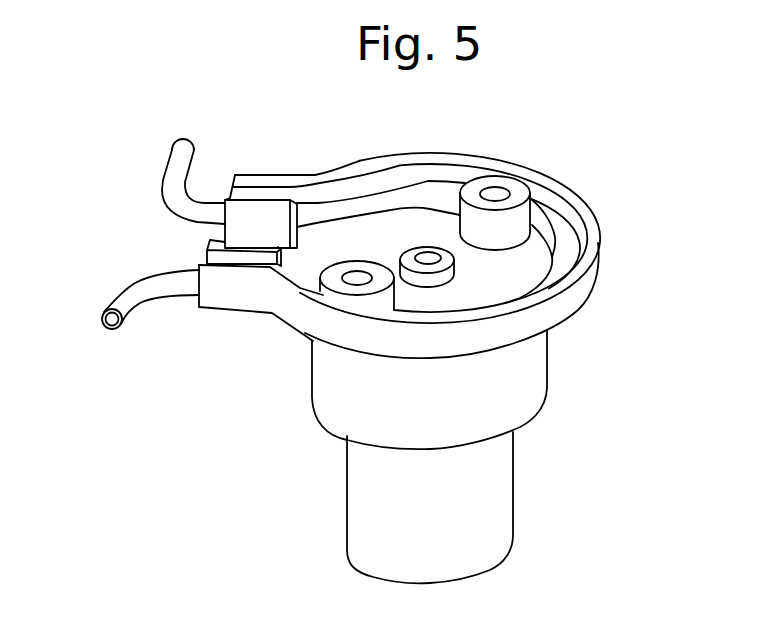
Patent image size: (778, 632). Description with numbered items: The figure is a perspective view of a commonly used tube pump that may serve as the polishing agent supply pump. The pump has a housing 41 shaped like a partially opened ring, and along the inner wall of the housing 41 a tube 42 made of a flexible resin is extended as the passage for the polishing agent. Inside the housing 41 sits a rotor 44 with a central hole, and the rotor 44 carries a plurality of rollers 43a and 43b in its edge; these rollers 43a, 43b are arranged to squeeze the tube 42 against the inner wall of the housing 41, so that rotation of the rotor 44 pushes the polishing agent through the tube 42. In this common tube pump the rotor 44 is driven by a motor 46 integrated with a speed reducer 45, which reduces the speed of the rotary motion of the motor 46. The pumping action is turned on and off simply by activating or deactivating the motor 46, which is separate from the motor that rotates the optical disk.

The housing 41 is at (590, 287).
The tube 42 is at (162, 172).
The roller 43a is at (530, 195).
The roller 43b is at (327, 293).
The rotor 44 is at (372, 222).
The speed reducer 45 is at (549, 386).
The motor 46 is at (516, 509).